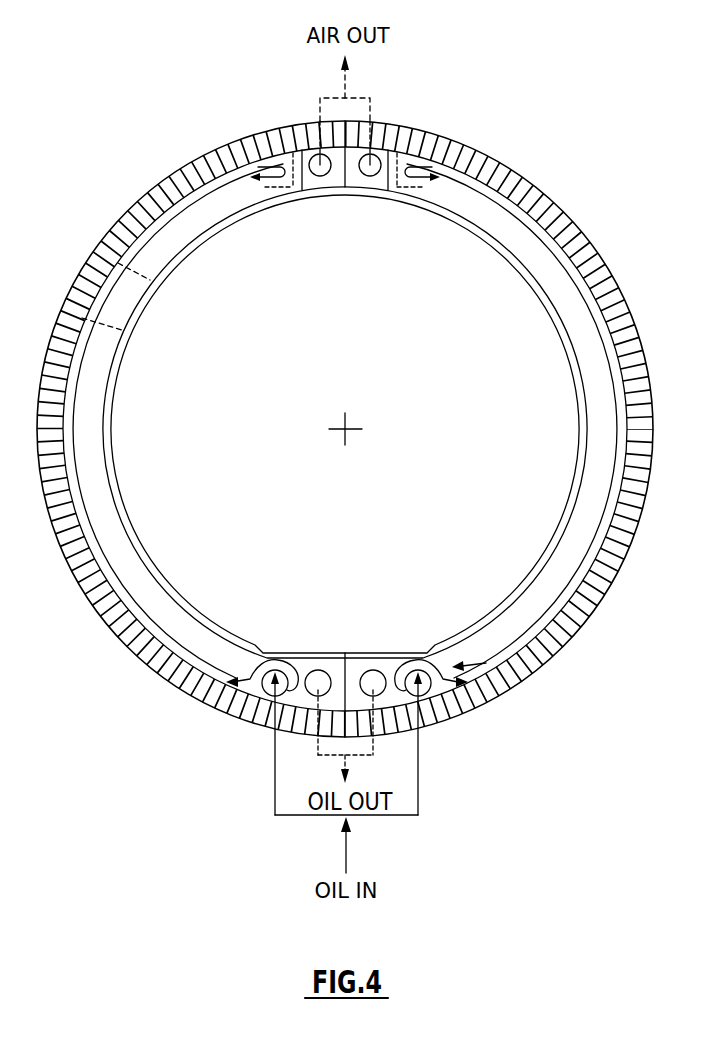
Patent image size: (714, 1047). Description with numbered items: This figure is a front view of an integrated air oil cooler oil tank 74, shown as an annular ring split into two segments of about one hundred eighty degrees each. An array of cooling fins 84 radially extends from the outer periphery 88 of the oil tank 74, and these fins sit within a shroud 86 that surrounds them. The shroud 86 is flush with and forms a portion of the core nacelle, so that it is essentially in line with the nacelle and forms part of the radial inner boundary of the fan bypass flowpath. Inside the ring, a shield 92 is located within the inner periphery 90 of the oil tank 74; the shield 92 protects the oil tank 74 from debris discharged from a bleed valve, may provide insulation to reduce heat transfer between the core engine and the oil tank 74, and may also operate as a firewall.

The oil tank 74 is at (486, 670).
The array of cooling fins 84 is at (163, 663).
The shroud 86 is at (225, 714).
The outer periphery 88 is at (107, 578).
The inner periphery 90 is at (345, 422).
The shield 92 is at (115, 375).